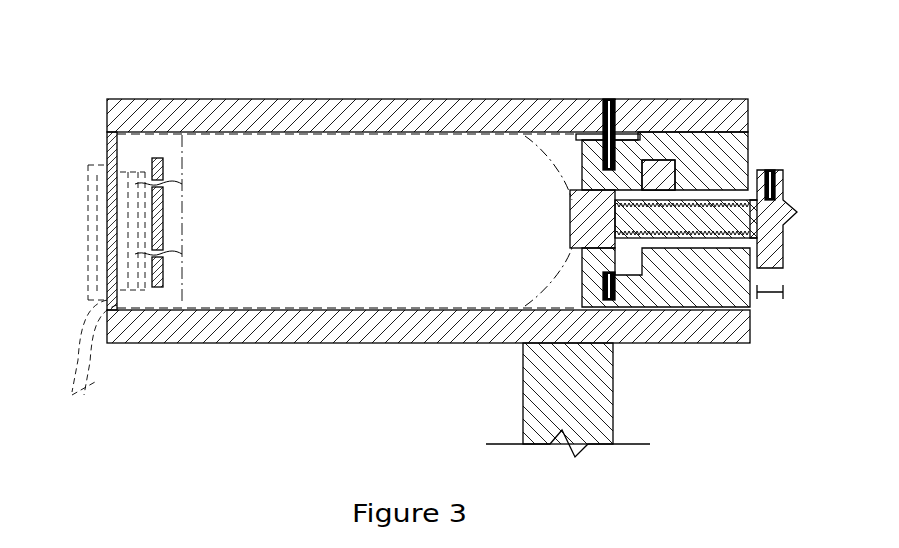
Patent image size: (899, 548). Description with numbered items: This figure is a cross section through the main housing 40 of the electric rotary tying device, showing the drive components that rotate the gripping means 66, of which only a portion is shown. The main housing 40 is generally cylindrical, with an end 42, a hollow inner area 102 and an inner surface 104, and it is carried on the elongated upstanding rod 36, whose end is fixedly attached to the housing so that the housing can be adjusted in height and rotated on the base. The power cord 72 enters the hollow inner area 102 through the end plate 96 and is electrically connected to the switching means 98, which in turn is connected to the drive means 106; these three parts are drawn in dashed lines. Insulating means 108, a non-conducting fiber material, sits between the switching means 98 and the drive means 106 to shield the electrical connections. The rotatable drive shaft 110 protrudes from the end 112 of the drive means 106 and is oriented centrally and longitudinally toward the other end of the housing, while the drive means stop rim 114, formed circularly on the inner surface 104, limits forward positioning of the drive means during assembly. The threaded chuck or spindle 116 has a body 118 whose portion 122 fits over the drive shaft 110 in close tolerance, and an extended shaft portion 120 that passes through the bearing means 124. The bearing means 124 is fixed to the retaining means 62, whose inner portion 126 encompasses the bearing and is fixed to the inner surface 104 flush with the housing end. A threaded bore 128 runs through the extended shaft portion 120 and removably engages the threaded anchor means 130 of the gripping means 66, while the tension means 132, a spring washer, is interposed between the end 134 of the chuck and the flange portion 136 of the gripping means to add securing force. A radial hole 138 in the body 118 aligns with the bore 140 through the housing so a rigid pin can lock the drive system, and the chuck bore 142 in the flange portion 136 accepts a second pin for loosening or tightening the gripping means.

The elongated upstanding rod 36 is at (613, 430).
The main housing 40 is at (386, 330).
The end of main housing 42 is at (107, 129).
The retaining means 62 is at (750, 150).
The gripping means 66 is at (773, 168).
The power cord 72 is at (76, 350).
The end plate 96 is at (107, 150).
The switching means 98 is at (97, 238).
The hollow inner area 102 is at (168, 146).
The inner surface 104 is at (548, 132).
The drive means 106 is at (166, 311).
The insulating means 108 is at (152, 165).
The rotatable drive shaft 110 is at (640, 300).
The end of drive means 112 is at (548, 327).
The drive means stop rim 114 is at (748, 99).
The threaded chuck or spindle 116 is at (578, 140).
The body of threaded chuck 118 is at (592, 140).
The extended shaft portion 120 is at (640, 40).
The portion of body 122 is at (583, 40).
The bearing means 124 is at (668, 278).
The inner portion of retaining means 126 is at (640, 84).
The threaded bore 128 is at (722, 256).
The threaded anchor means 130 is at (790, 213).
The tension means 132 is at (785, 252).
The end of threaded chuck 134 is at (783, 268).
The flange portion 136 is at (770, 292).
The hole or bore 138 is at (665, 135).
The bore 140 is at (608, 99).
The chuck bore 142 is at (775, 186).